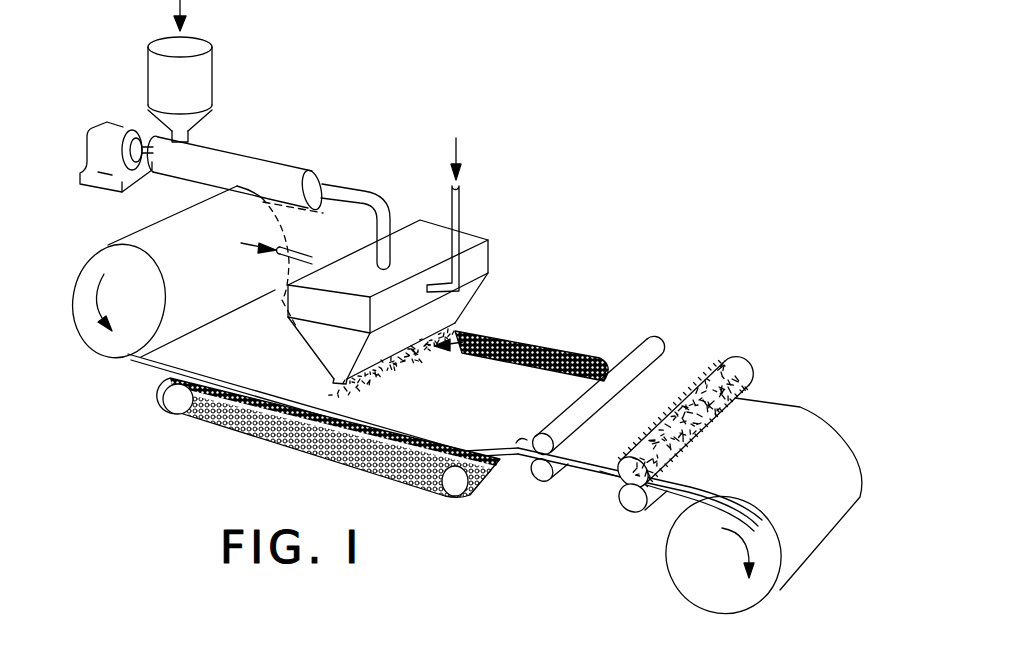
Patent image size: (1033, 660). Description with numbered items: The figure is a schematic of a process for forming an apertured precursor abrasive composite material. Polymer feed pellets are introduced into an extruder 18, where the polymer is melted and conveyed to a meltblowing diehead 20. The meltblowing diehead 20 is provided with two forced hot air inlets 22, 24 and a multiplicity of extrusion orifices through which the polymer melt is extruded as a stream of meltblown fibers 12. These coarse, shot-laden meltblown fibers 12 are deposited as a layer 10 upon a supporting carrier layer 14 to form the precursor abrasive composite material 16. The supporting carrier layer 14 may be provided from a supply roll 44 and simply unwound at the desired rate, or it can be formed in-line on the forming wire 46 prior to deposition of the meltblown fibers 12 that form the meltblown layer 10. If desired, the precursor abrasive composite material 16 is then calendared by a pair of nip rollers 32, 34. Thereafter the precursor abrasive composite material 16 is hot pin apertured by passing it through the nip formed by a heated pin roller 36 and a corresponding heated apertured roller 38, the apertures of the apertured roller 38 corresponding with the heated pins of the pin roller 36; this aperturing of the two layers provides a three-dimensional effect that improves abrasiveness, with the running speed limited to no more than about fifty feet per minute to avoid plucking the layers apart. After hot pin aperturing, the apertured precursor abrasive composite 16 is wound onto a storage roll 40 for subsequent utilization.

The layer of coarse, shot-laden meltblown fibers 10 is at (527, 380).
The meltblown fibers 12 is at (493, 337).
The supporting carrier layer 14 is at (155, 374).
The precursor abrasive composite material 16 is at (516, 443).
The extruder 18 is at (303, 146).
The meltblowing diehead 20 is at (508, 257).
The forced hot air inlet 22 is at (298, 241).
The forced hot air inlet 24 is at (461, 216).
The nip roller 32 is at (632, 340).
The nip roller 34 is at (563, 467).
The heated pin roller 36 is at (740, 356).
The heated apertured roller 38 is at (634, 515).
The storage roll 40 is at (757, 603).
The supply roll 44 is at (80, 290).
The forming wire 46 is at (237, 441).